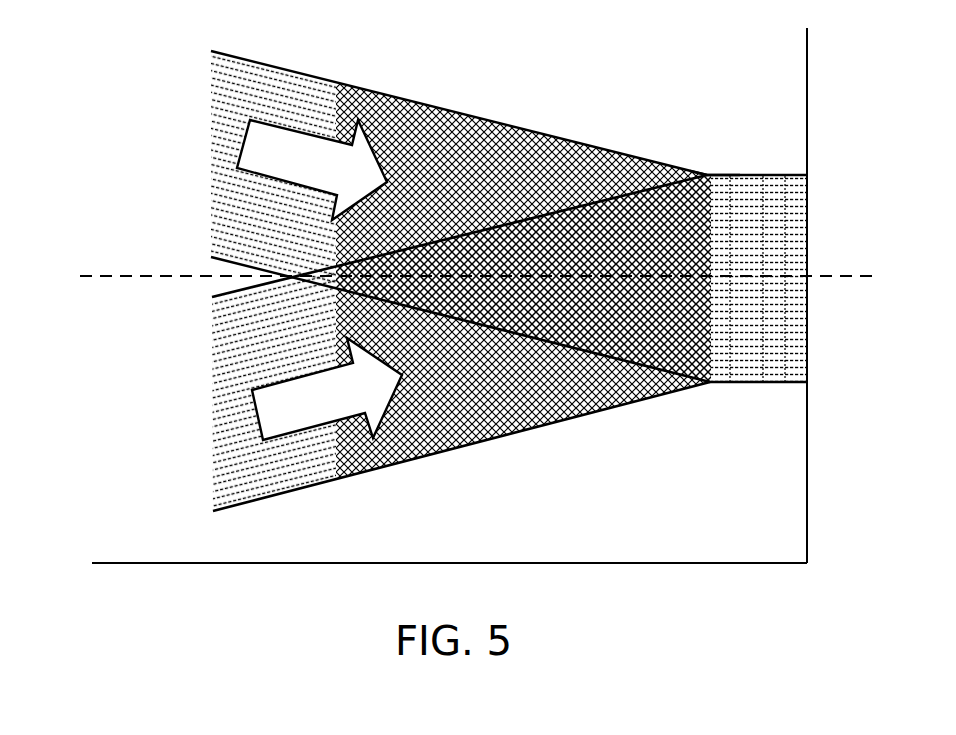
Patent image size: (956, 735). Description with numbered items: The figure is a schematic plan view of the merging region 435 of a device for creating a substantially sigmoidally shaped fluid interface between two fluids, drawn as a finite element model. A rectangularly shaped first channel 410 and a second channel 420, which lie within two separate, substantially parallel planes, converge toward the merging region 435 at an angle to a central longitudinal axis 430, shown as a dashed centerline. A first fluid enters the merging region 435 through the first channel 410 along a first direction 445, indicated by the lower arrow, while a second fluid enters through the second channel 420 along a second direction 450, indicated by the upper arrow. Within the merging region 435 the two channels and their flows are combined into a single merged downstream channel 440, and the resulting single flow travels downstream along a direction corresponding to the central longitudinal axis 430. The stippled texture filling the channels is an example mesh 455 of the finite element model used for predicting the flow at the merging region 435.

The first channel 410 is at (330, 483).
The second channel 420 is at (336, 86).
The central longitudinal axis 430 is at (113, 275).
The merging region 435 is at (708, 175).
The merged downstream channel 440 is at (769, 175).
The first direction 445 is at (273, 392).
The second direction 450 is at (273, 150).
The mesh 455 is at (523, 181).